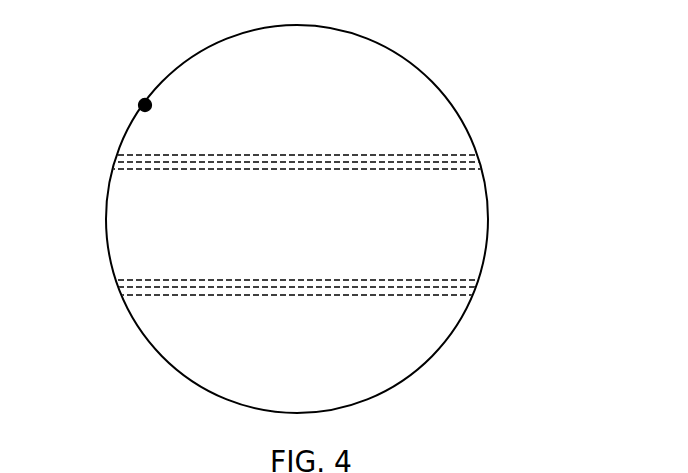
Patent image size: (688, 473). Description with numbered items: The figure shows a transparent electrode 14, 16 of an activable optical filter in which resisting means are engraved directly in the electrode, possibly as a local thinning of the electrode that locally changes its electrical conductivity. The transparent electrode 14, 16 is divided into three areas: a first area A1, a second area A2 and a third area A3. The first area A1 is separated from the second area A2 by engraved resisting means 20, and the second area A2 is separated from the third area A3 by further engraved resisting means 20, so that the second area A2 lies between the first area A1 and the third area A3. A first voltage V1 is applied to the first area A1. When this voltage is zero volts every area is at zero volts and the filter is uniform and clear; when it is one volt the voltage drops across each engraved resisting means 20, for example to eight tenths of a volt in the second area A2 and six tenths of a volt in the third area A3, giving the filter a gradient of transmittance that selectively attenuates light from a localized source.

The transparent electrode 14 is at (375, 217).
The transparent electrode 16 is at (463, 105).
The engraved resisting means 20 is at (433, 160).
The first voltage V1 is at (145, 105).
The first area A1 is at (317, 107).
The second area A2 is at (317, 230).
The third area A3 is at (317, 355).